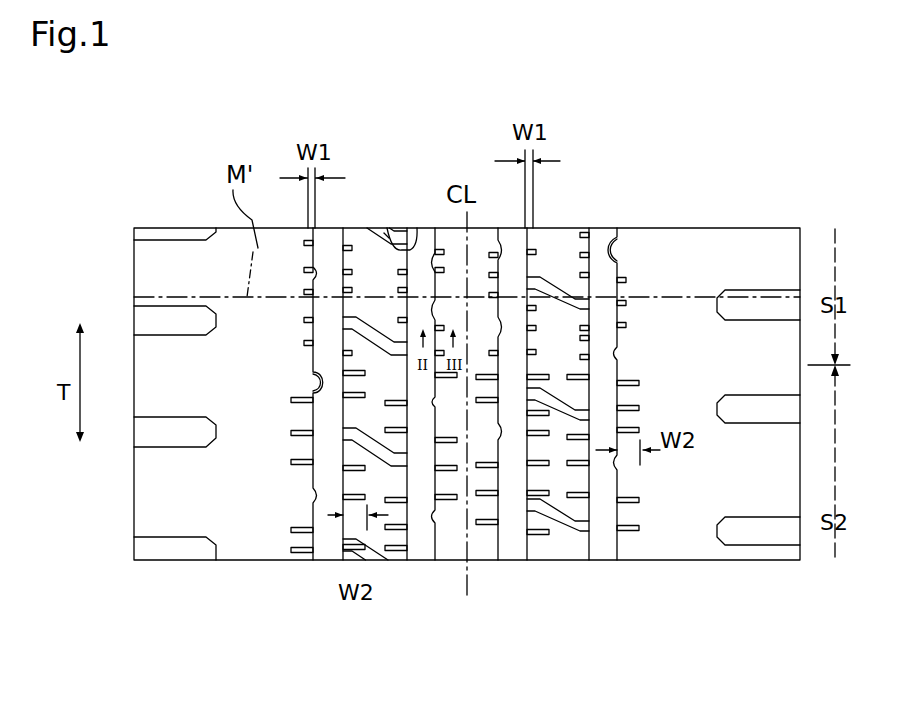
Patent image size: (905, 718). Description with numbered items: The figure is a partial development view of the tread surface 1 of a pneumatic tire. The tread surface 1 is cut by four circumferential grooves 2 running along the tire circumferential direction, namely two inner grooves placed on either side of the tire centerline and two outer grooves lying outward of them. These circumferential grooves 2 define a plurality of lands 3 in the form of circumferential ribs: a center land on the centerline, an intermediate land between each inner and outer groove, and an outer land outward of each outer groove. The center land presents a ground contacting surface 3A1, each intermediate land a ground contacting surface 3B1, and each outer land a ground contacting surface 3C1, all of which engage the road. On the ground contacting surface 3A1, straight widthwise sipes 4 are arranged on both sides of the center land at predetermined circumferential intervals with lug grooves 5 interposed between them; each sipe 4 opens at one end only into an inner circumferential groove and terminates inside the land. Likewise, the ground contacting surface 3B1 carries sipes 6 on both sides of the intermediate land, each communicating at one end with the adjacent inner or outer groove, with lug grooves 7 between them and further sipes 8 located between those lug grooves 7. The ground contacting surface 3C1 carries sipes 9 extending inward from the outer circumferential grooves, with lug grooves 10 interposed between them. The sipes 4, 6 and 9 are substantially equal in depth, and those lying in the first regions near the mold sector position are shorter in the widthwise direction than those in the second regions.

The tread surface 1 is at (580, 228).
The circumferential grooves 2 is at (330, 553).
The lands 3 is at (250, 552).
The ground contacting surface of center land 3A1 is at (499, 507).
The ground contacting surface of intermediate land 3B1 is at (353, 482).
The ground contacting surface of outer land 3C1 is at (183, 520).
The sipes 4 is at (490, 253).
The lug grooves 5 is at (437, 532).
The sipes 6 is at (363, 248).
The lug grooves 7 is at (417, 228).
The sipes 8 is at (387, 228).
The sipes 9 is at (305, 244).
The lug grooves 10 is at (308, 392).